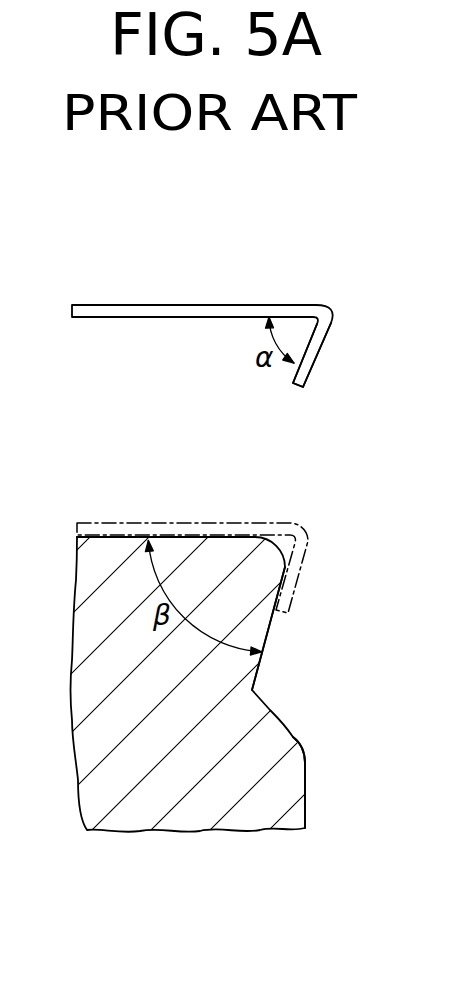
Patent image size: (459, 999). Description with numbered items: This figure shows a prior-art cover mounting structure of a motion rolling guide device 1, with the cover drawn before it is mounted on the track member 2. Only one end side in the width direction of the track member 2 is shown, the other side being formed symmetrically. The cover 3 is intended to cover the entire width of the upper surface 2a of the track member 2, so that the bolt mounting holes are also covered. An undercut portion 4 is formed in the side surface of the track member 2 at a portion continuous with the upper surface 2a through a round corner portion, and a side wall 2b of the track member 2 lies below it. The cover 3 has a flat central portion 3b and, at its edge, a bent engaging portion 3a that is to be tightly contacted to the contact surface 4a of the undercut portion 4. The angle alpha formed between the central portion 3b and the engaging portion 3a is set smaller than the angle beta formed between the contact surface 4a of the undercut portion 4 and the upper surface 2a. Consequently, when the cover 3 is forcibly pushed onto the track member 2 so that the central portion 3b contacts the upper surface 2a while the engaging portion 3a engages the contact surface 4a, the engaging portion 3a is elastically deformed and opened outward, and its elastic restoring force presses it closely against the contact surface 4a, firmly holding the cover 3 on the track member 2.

The device 1 is at (35, 273).
The track member 2 is at (182, 780).
The upper surface of the track member 2a is at (118, 537).
The side wall of housing body 2b is at (305, 780).
The cover 3 is at (215, 290).
The engaging portion 3a is at (322, 348).
The central portion of the cover 3b is at (133, 302).
The undercut portion 4 is at (303, 628).
The contact surface of the undercut portion 4a is at (262, 657).